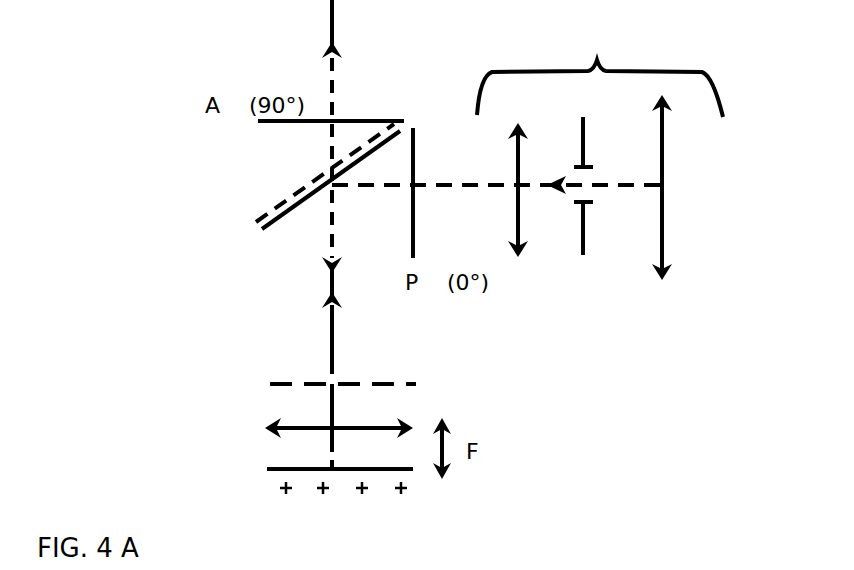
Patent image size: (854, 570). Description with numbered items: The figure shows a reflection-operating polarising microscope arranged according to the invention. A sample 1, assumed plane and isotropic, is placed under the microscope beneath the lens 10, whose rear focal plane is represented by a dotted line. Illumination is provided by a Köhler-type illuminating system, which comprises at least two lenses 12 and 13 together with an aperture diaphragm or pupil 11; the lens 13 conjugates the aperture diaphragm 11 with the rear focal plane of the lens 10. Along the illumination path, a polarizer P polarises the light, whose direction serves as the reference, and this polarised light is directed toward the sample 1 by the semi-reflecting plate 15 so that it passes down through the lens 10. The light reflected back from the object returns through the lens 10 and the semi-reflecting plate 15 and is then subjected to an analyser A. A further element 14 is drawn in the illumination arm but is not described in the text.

The sample 1 is at (378, 470).
The lens 10 is at (268, 422).
The aperture diaphragm 11 is at (598, 54).
The lens 12 is at (665, 228).
The lens 13 is at (518, 176).
The aperture 14 is at (590, 250).
The semi-reflecting plate 15 is at (278, 208).